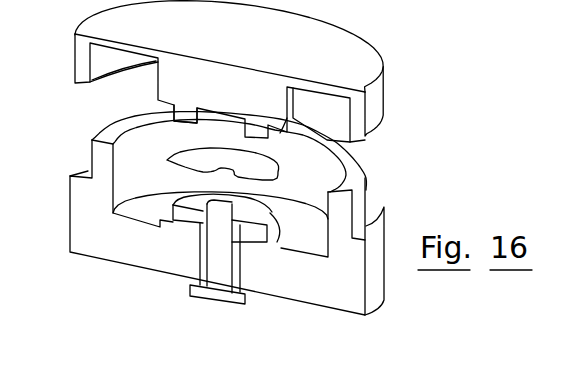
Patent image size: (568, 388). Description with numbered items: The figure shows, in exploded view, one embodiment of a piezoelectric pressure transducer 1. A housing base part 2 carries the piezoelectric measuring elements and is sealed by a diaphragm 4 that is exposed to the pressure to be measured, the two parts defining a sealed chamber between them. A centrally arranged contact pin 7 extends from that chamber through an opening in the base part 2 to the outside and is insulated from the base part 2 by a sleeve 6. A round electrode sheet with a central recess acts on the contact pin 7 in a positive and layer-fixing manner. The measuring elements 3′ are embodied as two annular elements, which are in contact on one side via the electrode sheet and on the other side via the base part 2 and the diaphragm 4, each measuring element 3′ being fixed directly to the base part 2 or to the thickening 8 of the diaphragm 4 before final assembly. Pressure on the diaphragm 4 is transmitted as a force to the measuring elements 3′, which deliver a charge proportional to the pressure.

The piezoelectric pressure transducer 1 is at (424, 138).
The housing base part 2 is at (227, 215).
The measuring element 3′ is at (199, 204).
The diaphragm 4 is at (247, 71).
The sleeve 6 is at (242, 258).
The contact pin 7 is at (218, 277).
The thickening 8 is at (132, 89).